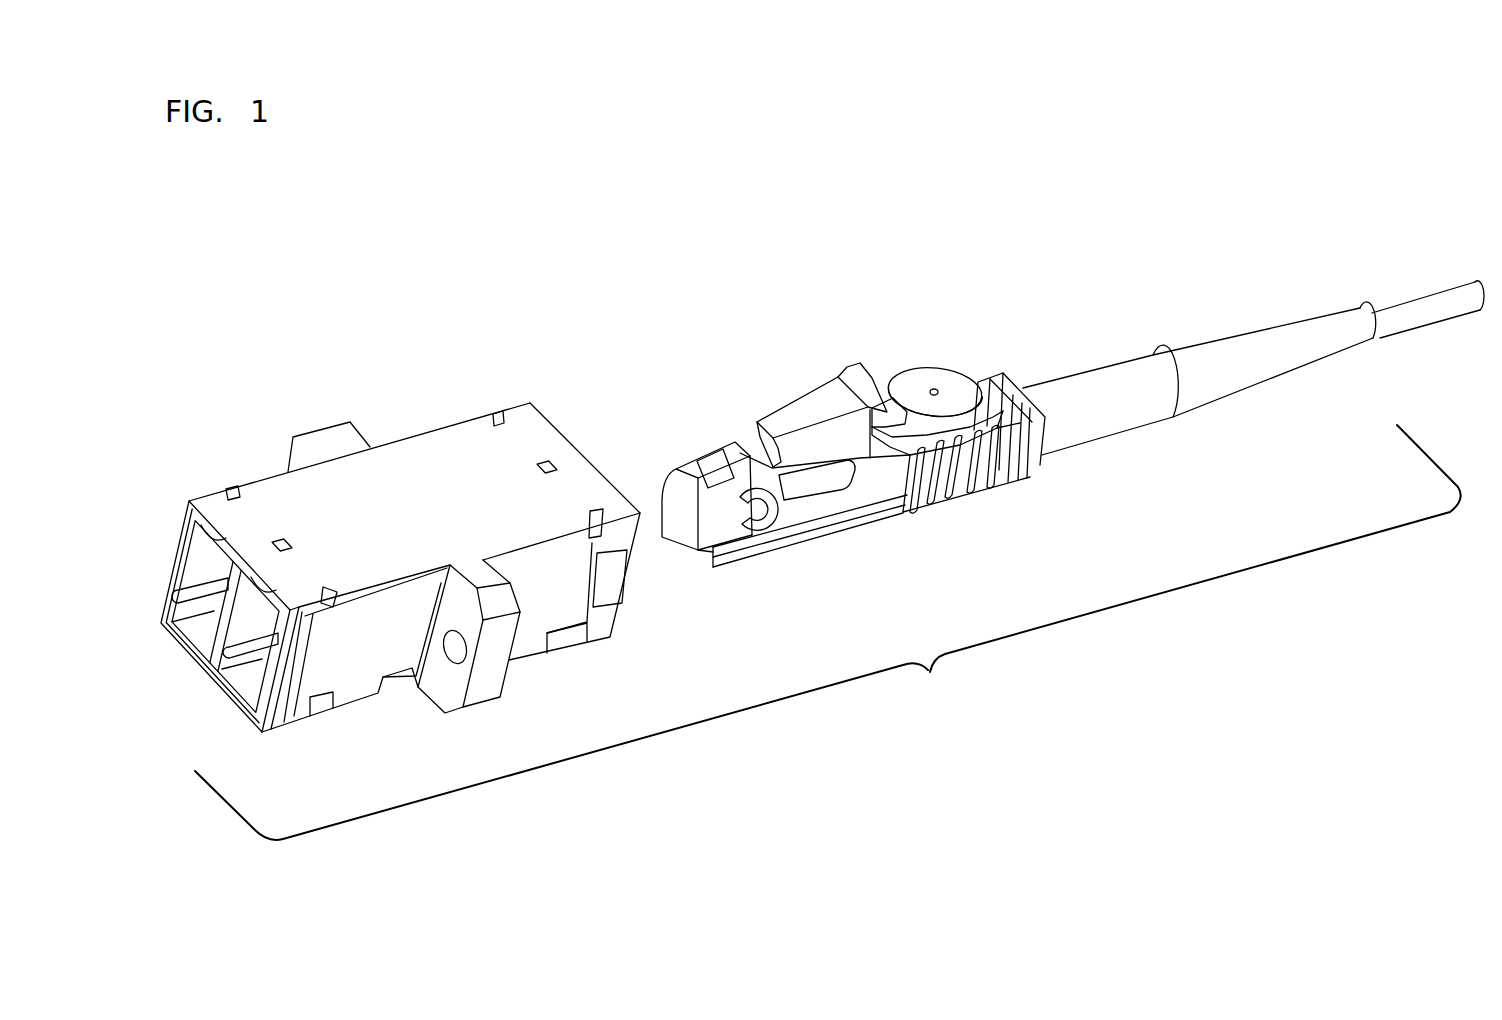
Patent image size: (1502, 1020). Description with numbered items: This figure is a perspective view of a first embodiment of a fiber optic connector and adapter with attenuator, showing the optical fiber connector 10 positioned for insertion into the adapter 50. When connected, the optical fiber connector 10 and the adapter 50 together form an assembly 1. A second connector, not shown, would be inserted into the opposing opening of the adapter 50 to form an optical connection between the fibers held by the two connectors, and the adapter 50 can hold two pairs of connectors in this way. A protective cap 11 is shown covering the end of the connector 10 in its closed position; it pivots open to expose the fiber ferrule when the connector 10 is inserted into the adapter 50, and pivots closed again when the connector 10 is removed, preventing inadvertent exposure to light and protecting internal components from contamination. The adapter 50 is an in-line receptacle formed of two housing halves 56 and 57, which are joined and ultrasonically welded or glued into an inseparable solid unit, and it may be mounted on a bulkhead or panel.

The assembly 1 is at (928, 670).
The optical fiber connector 10 is at (729, 354).
The protective cap 11 is at (682, 487).
The adapter 50 is at (438, 345).
The housing half 56 is at (278, 490).
The housing half 57 is at (447, 438).